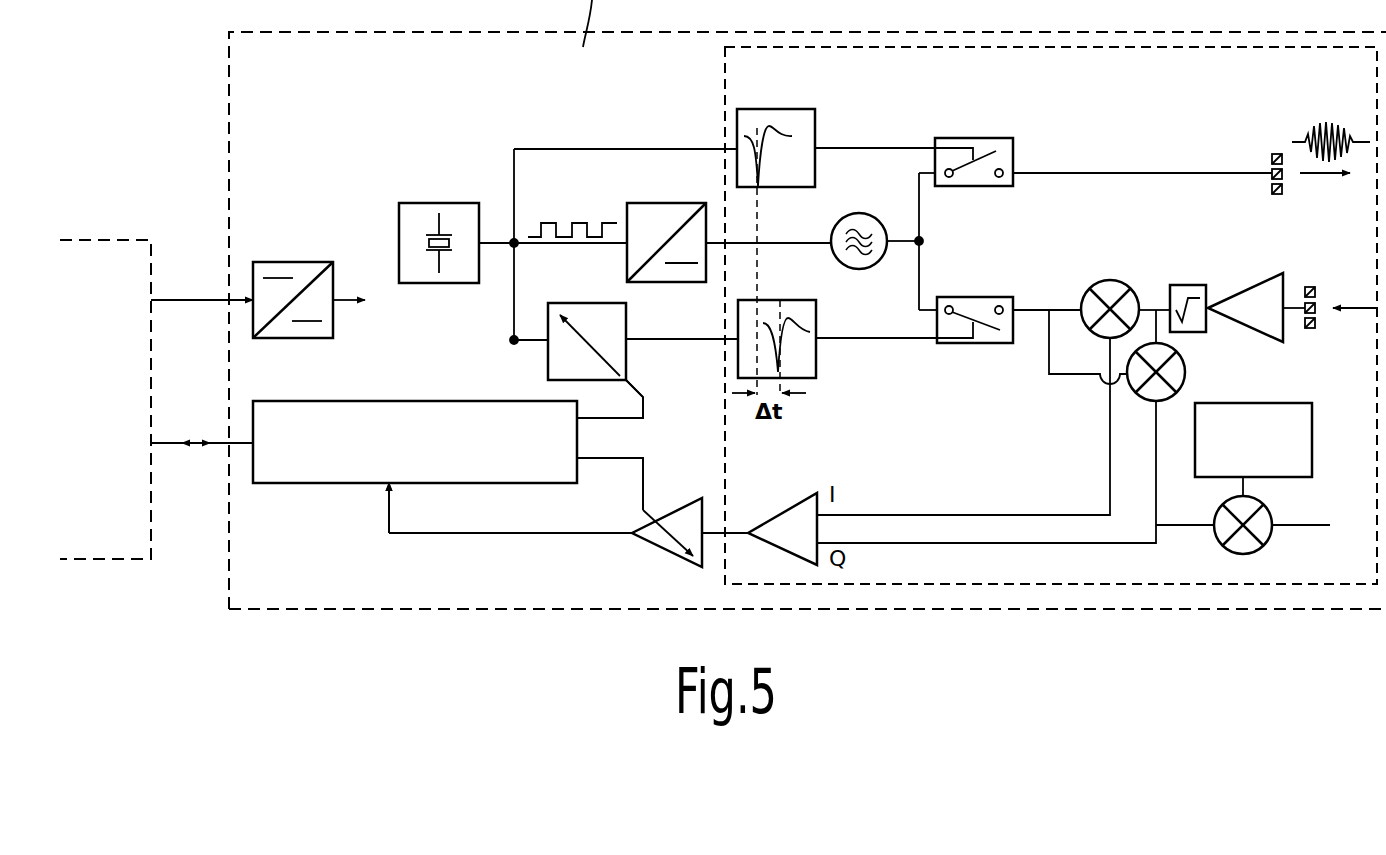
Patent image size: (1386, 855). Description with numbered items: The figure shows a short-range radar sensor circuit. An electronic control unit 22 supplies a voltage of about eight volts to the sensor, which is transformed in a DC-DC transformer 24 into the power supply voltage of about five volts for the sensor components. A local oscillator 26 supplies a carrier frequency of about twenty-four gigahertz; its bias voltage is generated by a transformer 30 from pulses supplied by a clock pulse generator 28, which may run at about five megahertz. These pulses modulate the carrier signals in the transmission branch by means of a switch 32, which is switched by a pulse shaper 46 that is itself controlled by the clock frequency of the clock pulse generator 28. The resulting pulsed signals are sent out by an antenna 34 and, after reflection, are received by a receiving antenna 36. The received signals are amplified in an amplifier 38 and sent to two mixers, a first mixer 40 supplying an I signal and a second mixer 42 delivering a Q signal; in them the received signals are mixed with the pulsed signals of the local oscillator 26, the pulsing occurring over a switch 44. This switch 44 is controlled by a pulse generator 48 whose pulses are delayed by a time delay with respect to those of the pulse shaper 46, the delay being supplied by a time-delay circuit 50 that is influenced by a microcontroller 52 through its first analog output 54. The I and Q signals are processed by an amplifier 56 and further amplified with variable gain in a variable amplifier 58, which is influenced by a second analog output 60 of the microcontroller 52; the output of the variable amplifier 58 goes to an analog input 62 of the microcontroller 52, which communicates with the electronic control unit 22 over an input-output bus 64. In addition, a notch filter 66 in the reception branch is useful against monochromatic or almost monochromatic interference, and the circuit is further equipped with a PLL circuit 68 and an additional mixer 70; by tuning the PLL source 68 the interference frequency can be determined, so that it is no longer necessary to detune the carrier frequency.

The electronic control unit 22 is at (110, 540).
The voltage converter 24 is at (273, 262).
The local oscillator 26 is at (859, 225).
The clock pulse generator 28 is at (440, 208).
The transformer 30 is at (640, 208).
The switch 32 is at (993, 145).
The antenna 34 is at (1268, 153).
The receiving antenna 36 is at (1318, 323).
The amplifier 38 is at (1270, 330).
The first mixer 40 is at (1107, 284).
The second mixer 42 is at (1184, 378).
The switch 44 is at (990, 343).
The pulse shaper 46 is at (770, 111).
The pulse generator 48 is at (815, 372).
The time-delay circuit 50 is at (627, 324).
The microcontroller 52 is at (297, 483).
The first analog output 54 is at (577, 419).
The amplifier 56 is at (790, 515).
The variable amplifier 58 is at (686, 512).
The second analog output 60 is at (577, 458).
The analog input 62 is at (389, 482).
The input-output bus 64 is at (196, 450).
The notch filter 66 is at (1188, 285).
The PLL circuit 68 is at (1302, 463).
The additional mixer 70 is at (1265, 533).